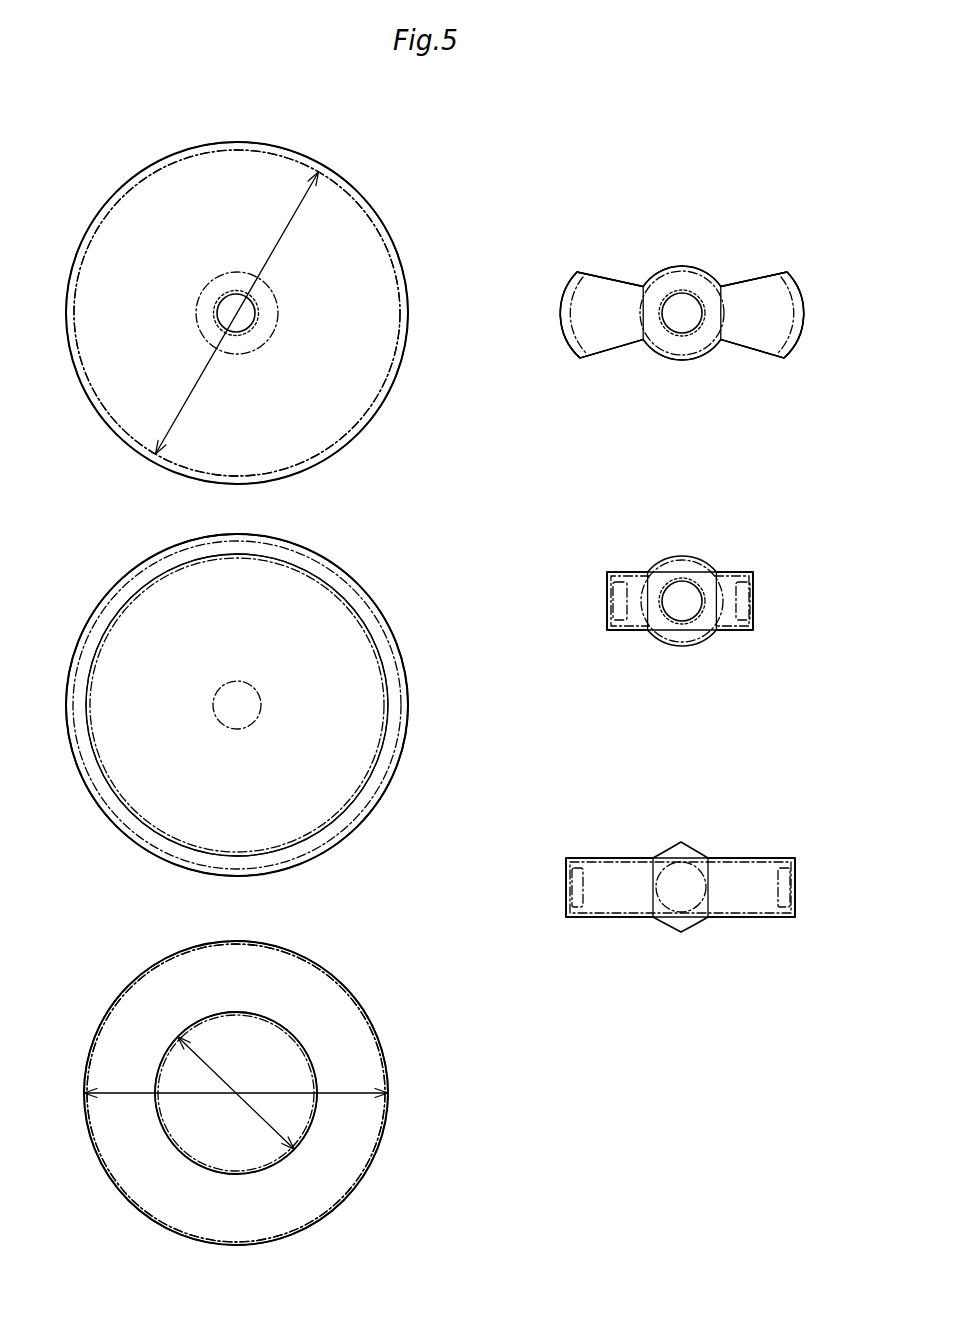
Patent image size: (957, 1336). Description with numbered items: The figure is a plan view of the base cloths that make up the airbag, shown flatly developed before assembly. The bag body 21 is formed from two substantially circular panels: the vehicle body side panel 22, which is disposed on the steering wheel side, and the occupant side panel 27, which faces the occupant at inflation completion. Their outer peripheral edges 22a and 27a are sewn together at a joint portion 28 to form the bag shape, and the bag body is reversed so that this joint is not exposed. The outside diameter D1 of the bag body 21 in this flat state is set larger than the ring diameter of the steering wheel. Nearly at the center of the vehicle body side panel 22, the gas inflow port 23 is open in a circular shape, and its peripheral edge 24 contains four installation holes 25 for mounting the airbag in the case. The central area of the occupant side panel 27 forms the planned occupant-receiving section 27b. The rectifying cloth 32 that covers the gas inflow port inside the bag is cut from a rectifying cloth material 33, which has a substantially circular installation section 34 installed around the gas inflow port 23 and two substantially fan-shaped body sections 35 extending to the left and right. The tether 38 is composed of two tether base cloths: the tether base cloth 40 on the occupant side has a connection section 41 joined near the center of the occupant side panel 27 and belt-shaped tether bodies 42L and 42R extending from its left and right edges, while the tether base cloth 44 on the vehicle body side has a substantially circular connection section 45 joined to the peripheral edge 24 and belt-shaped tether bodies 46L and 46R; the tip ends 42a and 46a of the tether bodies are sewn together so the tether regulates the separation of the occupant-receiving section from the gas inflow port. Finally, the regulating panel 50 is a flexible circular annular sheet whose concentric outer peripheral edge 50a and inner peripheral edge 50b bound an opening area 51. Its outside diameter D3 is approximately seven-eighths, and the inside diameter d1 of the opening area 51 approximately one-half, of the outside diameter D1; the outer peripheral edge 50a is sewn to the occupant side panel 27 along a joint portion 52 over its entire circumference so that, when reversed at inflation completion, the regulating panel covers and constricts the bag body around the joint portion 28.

The bag body 21 is at (87, 198).
The vehicle body side panel 22 is at (357, 180).
The outer peripheral edge 22a is at (375, 212).
The gas inflow port 23 is at (235, 333).
The peripheral edge 24 is at (265, 302).
The installation holes 25 is at (253, 328).
The occupant side panel 27 is at (332, 552).
The outer peripheral edge 27a is at (388, 777).
The planned occupant-receiving section 27b is at (222, 703).
The joint portion 28 is at (378, 397).
The rectifying cloth 32 is at (681, 313).
The rectifying cloth material 33 is at (682, 250).
The installation section 34 is at (682, 347).
The body sections 35 is at (602, 342).
The tether 38 is at (768, 705).
The tether base cloth 40 is at (738, 850).
The connection section 41 is at (687, 918).
The tether body 42L is at (610, 908).
The tether body 42R is at (752, 908).
The tip ends 42a is at (566, 887).
The tether base cloth 44 is at (738, 633).
The connection section 45 is at (690, 567).
The tether body 46L is at (607, 577).
The tether body 46R is at (753, 577).
The tip ends 46a is at (607, 610).
The regulating panel 50 is at (110, 987).
The outer peripheral edge 50a is at (283, 948).
The inner peripheral edge 50b is at (188, 1157).
The opening area 51 is at (290, 1027).
The joint portion 52 is at (295, 840).
The outside diameter D1 is at (283, 225).
The outside diameter D3 is at (343, 1093).
The inside diameter d1 is at (273, 1127).